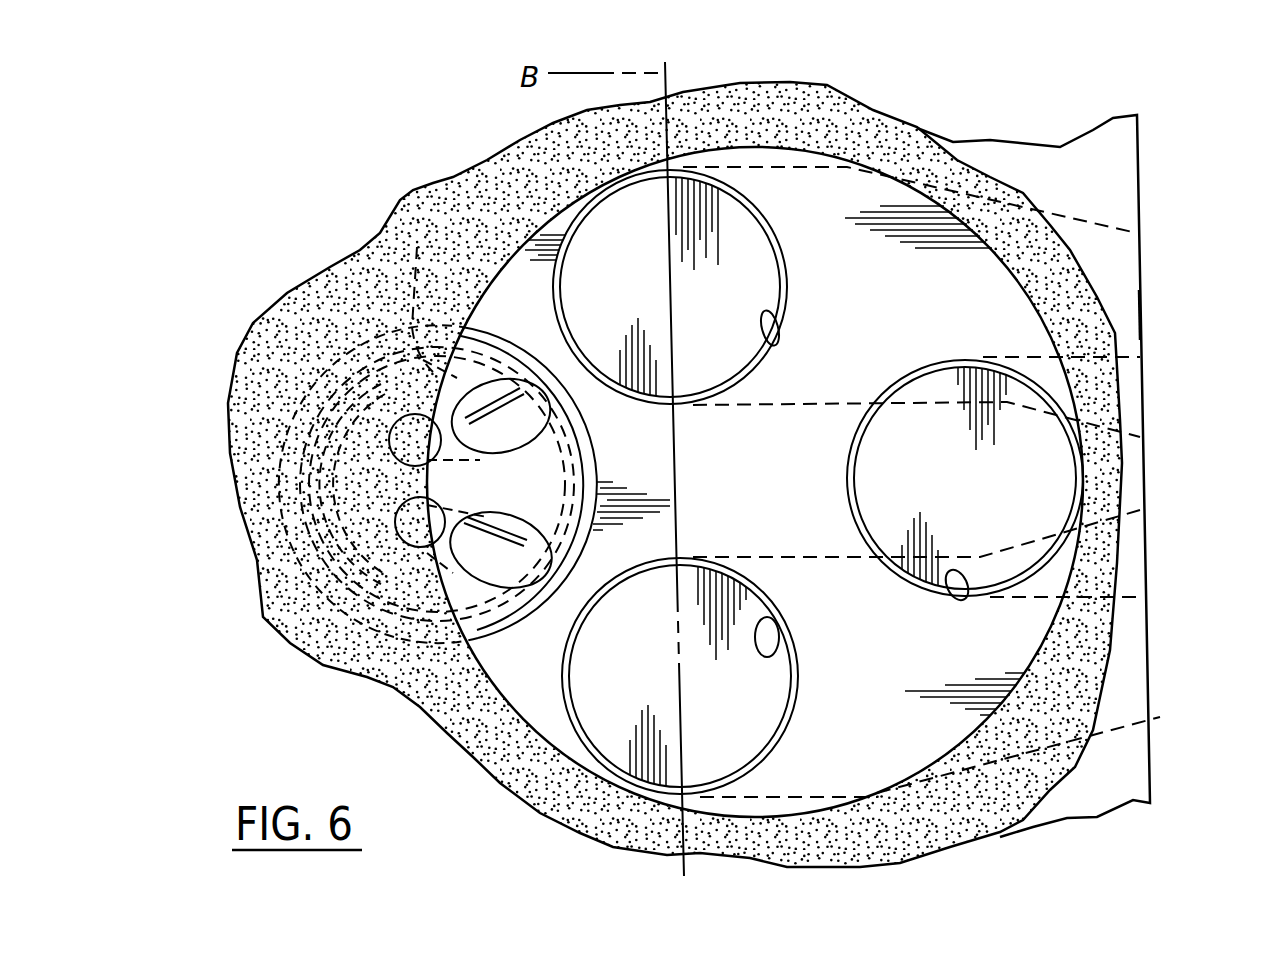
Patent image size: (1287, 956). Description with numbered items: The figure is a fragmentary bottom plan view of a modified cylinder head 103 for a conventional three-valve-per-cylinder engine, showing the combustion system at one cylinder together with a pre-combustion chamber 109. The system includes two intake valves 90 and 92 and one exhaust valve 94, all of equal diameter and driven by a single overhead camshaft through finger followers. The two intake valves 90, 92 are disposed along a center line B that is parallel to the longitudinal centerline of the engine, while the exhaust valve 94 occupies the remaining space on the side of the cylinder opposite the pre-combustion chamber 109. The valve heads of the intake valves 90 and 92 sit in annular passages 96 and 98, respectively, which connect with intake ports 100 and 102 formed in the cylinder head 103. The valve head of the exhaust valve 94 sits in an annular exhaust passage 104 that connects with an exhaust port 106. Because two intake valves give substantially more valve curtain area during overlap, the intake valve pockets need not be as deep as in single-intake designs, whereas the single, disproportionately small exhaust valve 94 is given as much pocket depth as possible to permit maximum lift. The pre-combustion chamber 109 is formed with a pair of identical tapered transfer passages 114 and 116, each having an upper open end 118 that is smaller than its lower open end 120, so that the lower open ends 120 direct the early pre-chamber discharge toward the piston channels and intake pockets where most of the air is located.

The intake valve 90 is at (642, 279).
The intake valve 92 is at (645, 651).
The exhaust valve 94 is at (985, 490).
The annular passage 96 is at (772, 312).
The annular passage 98 is at (779, 650).
The intake port 100 is at (1085, 221).
The intake port 102 is at (1110, 727).
The cylinder head 103 is at (1157, 318).
The annular exhaust passage 104 is at (950, 598).
The exhaust port 106 is at (1103, 581).
The pre-combustion chamber 109 is at (612, 472).
The transfer passage 114 is at (428, 294).
The transfer passage 116 is at (413, 617).
The upper open end 118 is at (330, 520).
The lower open end 120 is at (483, 392).